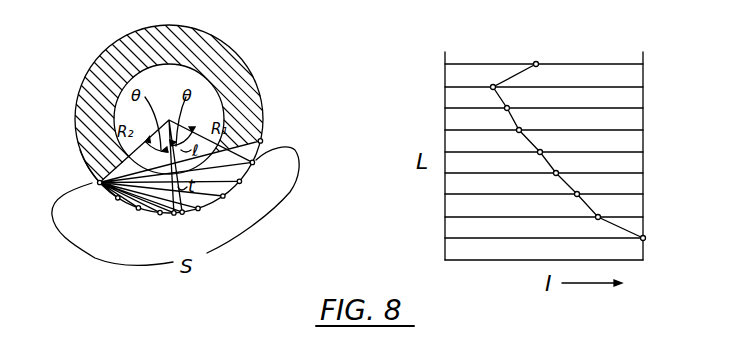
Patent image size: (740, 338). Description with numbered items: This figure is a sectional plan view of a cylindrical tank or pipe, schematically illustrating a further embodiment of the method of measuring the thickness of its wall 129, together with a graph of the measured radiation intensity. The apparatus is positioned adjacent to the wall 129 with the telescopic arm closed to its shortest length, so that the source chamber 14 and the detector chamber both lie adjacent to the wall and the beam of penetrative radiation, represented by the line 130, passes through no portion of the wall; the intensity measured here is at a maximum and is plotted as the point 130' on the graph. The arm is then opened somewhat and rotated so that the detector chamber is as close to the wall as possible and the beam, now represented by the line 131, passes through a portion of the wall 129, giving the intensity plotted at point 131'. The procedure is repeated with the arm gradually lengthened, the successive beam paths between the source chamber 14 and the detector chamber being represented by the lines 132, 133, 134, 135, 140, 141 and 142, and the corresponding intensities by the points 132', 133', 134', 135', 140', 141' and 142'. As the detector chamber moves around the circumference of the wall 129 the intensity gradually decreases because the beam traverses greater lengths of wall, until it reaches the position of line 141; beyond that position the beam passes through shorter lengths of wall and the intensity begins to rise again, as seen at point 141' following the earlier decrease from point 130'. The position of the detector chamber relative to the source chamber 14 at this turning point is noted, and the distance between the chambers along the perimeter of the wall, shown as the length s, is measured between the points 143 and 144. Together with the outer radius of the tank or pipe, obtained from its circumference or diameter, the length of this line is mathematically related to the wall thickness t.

The source chamber 14 is at (96, 184).
The wall 129 is at (78, 112).
The line representing beam path 130 is at (83, 201).
The line representing beam path 131 is at (122, 214).
The line representing beam path 132 is at (144, 234).
The line representing beam path 133 is at (166, 227).
The line representing beam path 134 is at (204, 225).
The line representing beam path 135 is at (242, 206).
The line representing beam path 140 is at (258, 182).
The line representing beam path 141 is at (270, 162).
The line representing beam path 142 is at (280, 135).
The point 143 is at (94, 172).
The point 144 is at (282, 148).
The point on graph 130' is at (668, 238).
The point on graph 131' is at (618, 208).
The point on graph 132' is at (596, 185).
The point on graph 133' is at (577, 165).
The point on graph 134' is at (560, 144).
The point on graph 135' is at (541, 122).
The point on graph 140' is at (531, 100).
The point on graph 141' is at (474, 79).
The point on graph 142' is at (559, 53).